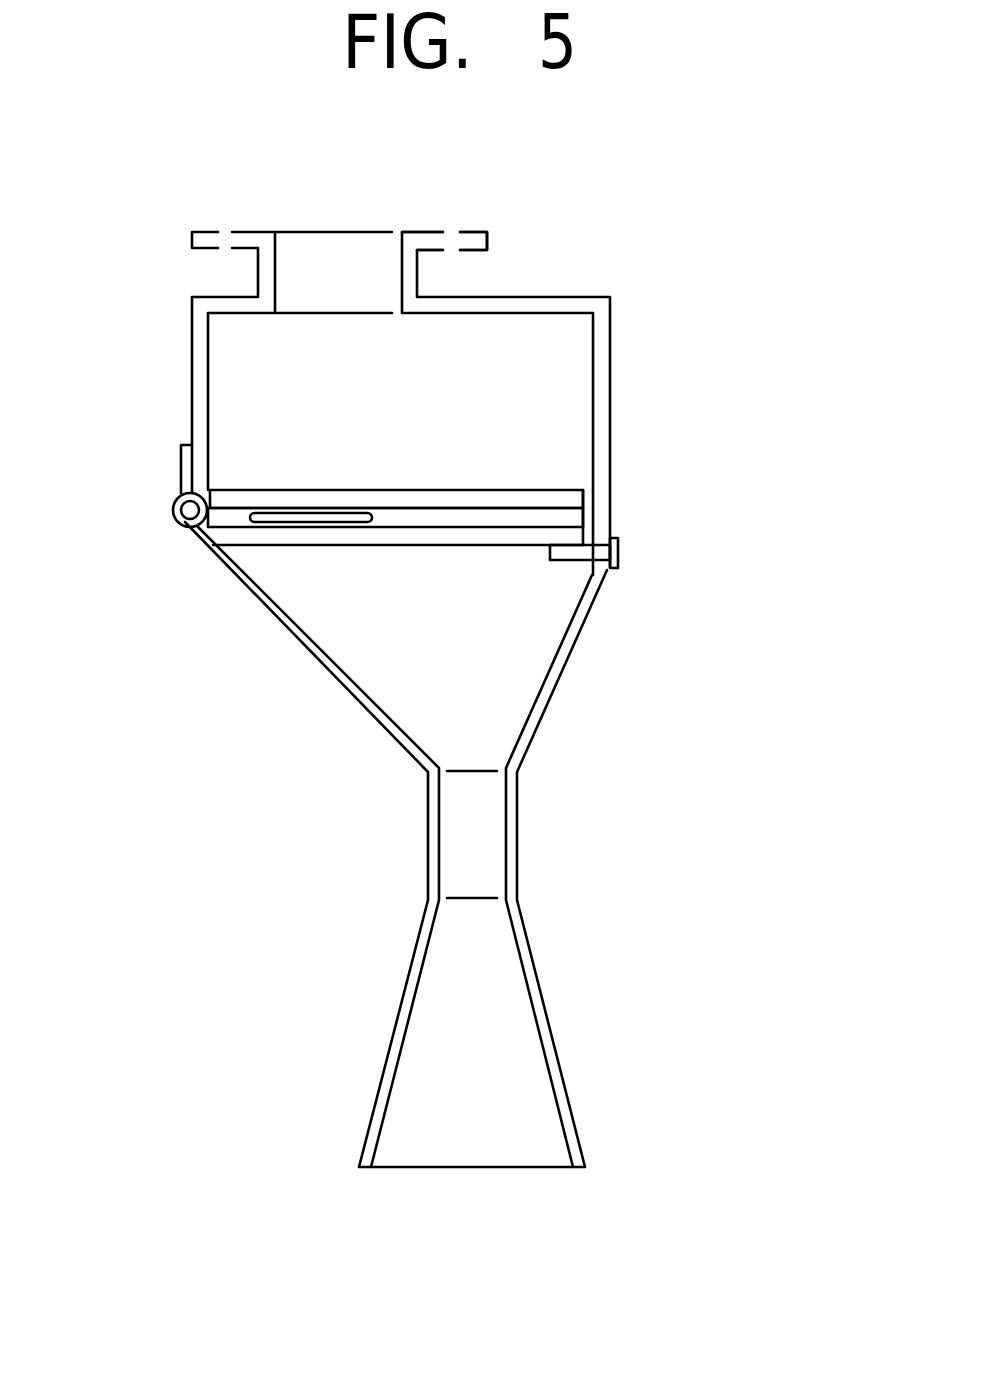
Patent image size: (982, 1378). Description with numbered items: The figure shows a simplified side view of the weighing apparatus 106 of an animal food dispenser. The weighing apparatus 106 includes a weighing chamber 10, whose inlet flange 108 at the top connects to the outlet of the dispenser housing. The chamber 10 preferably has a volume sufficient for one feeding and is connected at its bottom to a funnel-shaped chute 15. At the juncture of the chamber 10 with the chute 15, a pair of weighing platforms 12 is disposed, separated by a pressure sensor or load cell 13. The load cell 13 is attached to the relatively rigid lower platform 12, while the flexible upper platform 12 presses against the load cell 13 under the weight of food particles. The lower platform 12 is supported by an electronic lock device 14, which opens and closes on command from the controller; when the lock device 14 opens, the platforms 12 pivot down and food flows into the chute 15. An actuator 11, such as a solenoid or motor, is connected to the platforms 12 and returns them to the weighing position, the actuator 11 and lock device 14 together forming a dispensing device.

The weighing apparatus 106 is at (193, 187).
The inlet flange 108 is at (428, 240).
The weighing chamber 10 is at (192, 350).
The actuator 11 is at (177, 522).
The weighing platforms 12 is at (552, 535).
The load cell 13 is at (313, 527).
The electronic lock device 14 is at (617, 553).
The funnel-shaped chute 15 is at (488, 837).